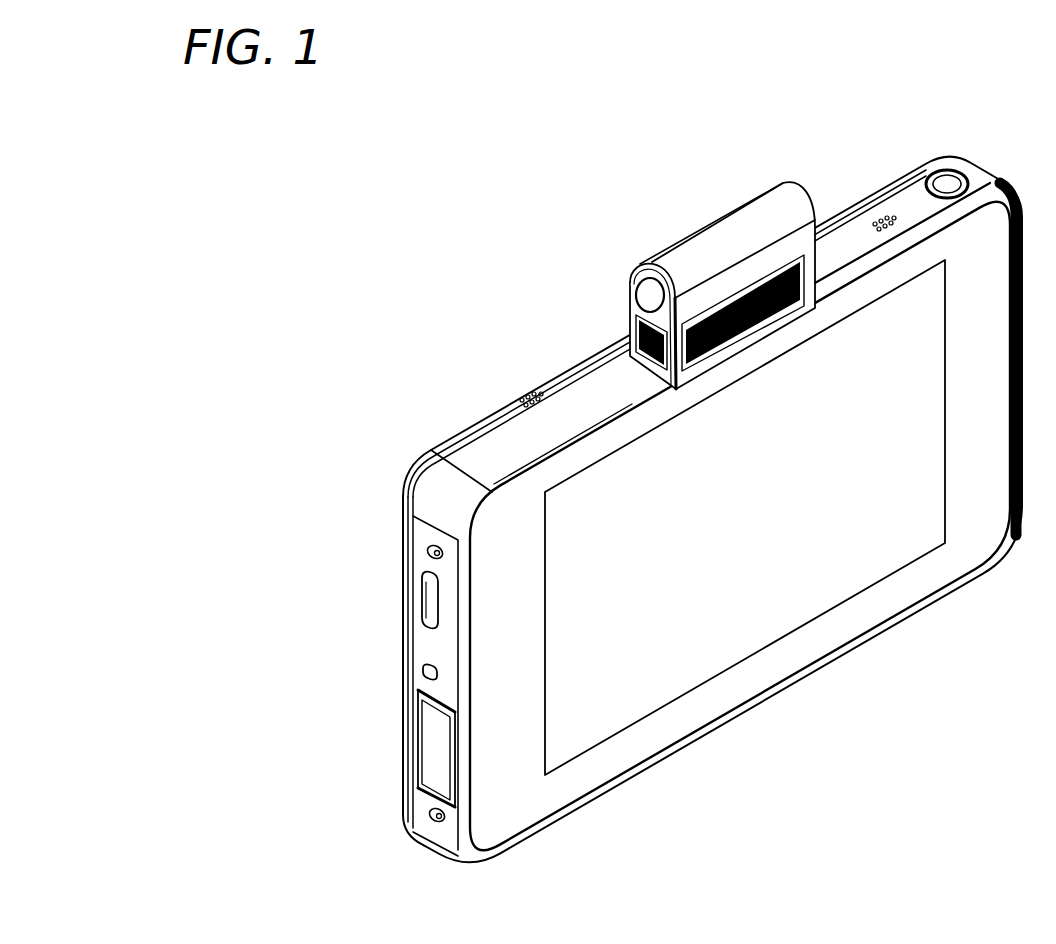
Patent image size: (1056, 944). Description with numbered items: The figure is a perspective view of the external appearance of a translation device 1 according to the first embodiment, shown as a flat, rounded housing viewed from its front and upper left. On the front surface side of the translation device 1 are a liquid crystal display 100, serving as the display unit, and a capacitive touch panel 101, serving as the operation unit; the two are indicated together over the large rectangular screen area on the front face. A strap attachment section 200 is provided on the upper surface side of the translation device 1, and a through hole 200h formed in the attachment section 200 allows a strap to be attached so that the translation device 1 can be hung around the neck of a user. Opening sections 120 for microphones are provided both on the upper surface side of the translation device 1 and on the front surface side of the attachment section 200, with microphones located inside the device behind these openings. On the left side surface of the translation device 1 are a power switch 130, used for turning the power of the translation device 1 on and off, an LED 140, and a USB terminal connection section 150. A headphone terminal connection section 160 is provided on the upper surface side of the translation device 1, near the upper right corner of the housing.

The translation device 1 is at (431, 174).
The liquid crystal display 100 is at (666, 476).
The capacitive touch panel 101 is at (757, 623).
The opening sections for microphones 120 is at (528, 398).
The power switch 130 is at (430, 602).
The LED 140 is at (425, 672).
The USB terminal connection section 150 is at (440, 748).
The headphone terminal connection section 160 is at (947, 187).
The strap attachment section 200 is at (657, 279).
The through hole 200h is at (582, 273).